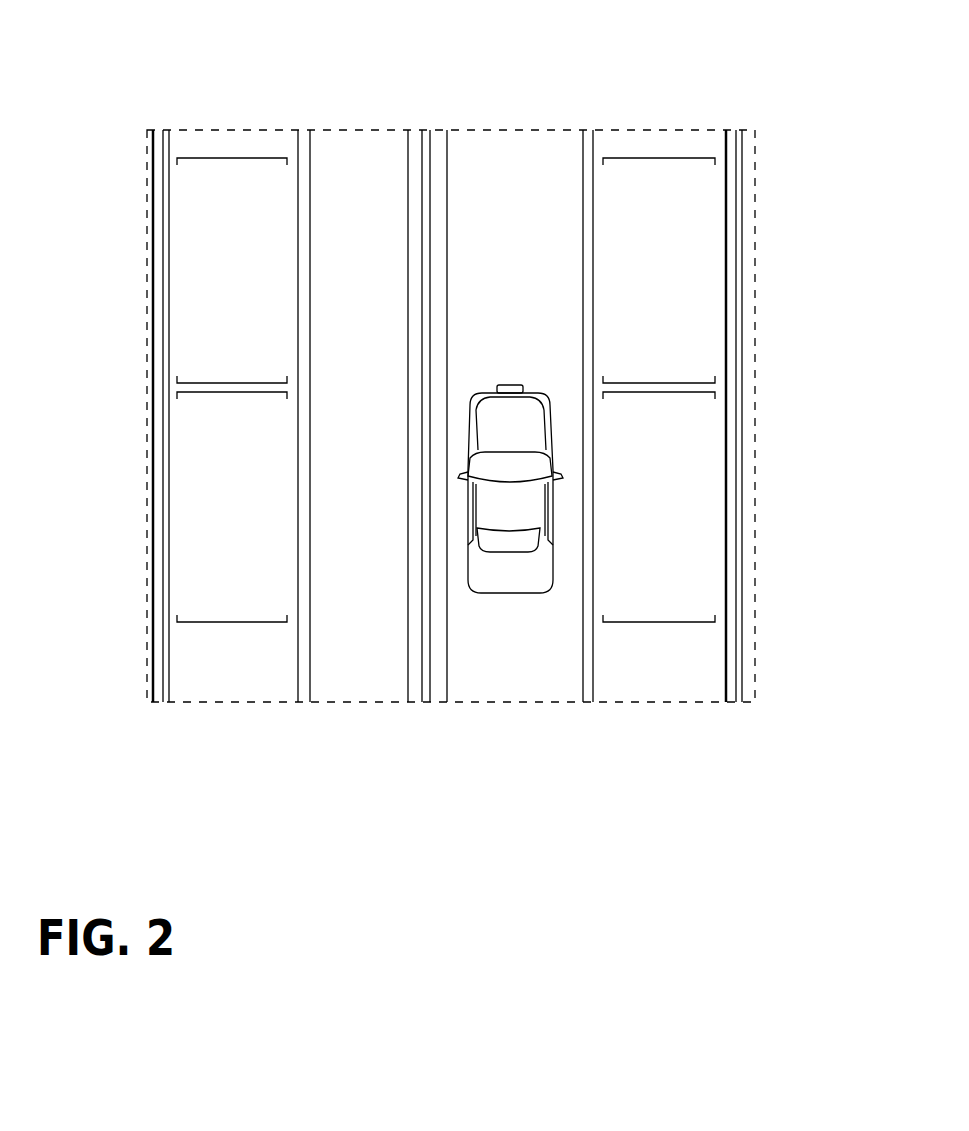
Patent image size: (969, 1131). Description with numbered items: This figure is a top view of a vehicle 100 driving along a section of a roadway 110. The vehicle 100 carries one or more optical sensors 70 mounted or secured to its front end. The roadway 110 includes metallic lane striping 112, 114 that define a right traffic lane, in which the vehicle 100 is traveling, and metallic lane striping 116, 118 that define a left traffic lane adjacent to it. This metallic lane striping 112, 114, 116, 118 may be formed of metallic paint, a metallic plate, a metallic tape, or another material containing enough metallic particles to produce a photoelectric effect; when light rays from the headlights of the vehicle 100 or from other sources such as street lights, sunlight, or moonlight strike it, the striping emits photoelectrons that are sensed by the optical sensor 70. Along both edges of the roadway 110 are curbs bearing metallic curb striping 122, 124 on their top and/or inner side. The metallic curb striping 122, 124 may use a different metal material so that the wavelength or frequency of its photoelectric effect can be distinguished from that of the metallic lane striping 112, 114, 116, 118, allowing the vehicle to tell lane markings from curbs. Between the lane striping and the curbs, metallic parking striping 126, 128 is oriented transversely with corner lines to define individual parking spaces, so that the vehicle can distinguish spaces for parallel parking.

The roadway 110 is at (414, 117).
The metallic lane striping 112 is at (578, 152).
The metallic lane striping 114 is at (440, 163).
The metallic lane striping 116 is at (416, 175).
The metallic lane striping 118 is at (302, 152).
The metallic curb striping 122 is at (735, 195).
The metallic curb striping 124 is at (151, 245).
The metallic parking striping 126 is at (692, 162).
The metallic parking striping 128 is at (270, 162).
The vehicle 100 is at (520, 594).
The optical sensor 70 is at (507, 384).